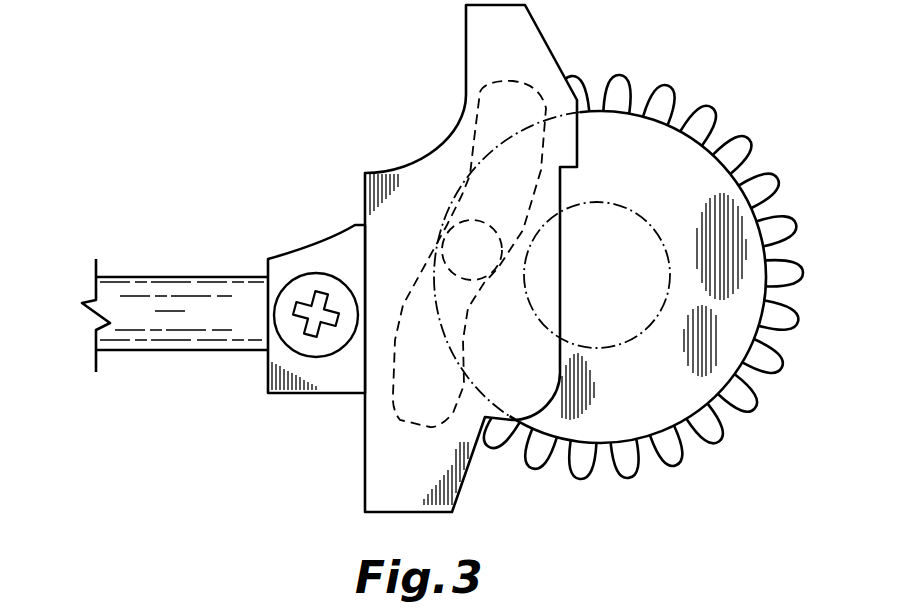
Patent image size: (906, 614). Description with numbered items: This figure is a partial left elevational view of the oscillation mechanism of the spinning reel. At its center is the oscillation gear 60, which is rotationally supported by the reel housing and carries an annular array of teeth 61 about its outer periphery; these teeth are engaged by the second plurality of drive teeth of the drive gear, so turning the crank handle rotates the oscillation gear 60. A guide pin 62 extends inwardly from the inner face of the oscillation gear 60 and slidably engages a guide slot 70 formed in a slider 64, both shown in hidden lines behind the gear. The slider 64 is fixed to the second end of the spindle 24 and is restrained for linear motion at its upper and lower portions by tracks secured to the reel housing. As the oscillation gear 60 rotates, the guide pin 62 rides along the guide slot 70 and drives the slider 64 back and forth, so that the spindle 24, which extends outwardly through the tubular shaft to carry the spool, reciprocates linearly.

The spindle 24 is at (190, 352).
The oscillation gear 60 is at (652, 179).
The teeth 61 is at (750, 138).
The guide pin 62 is at (468, 212).
The slider 64 is at (421, 482).
The guide slot 70 is at (377, 427).